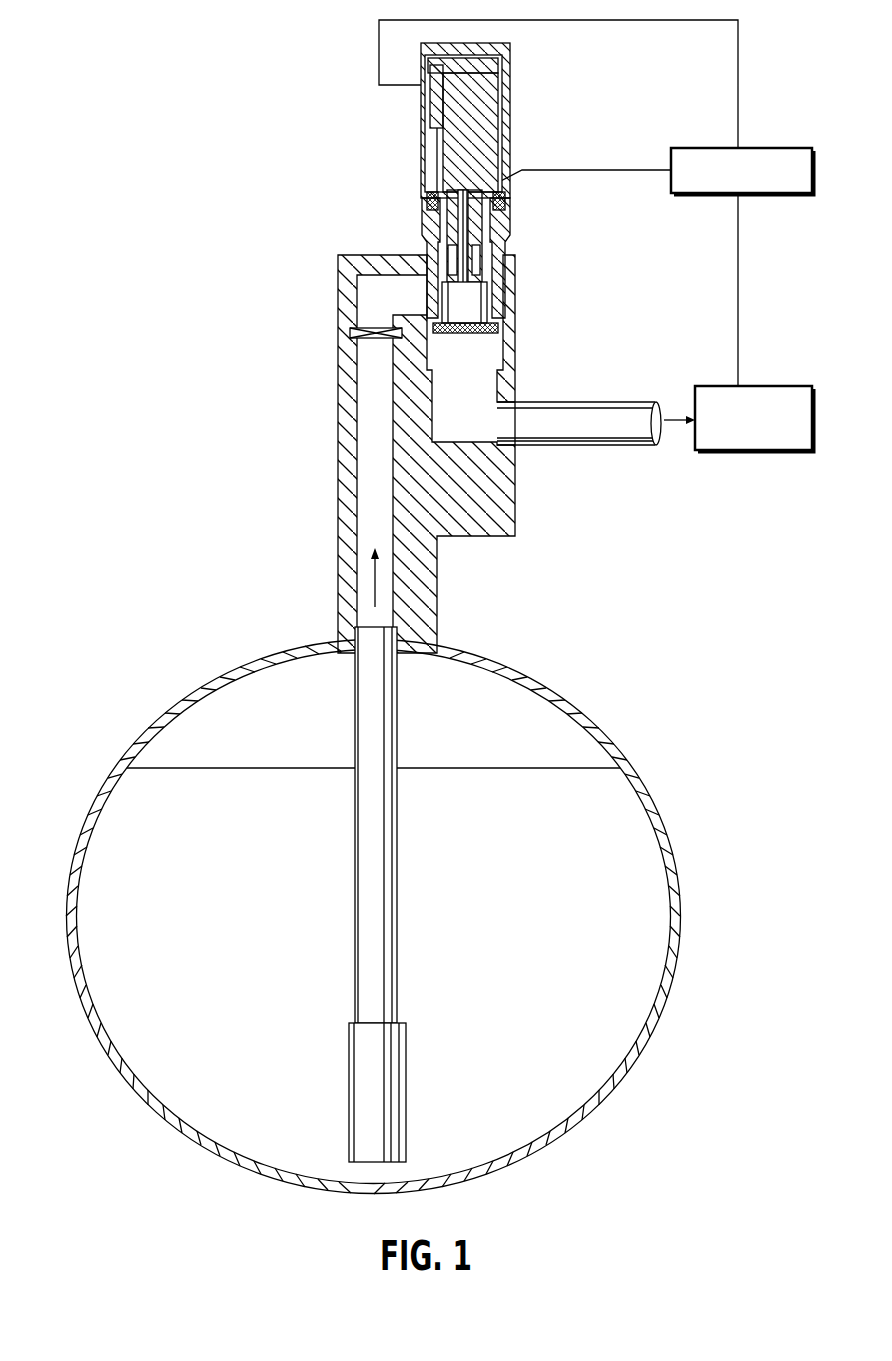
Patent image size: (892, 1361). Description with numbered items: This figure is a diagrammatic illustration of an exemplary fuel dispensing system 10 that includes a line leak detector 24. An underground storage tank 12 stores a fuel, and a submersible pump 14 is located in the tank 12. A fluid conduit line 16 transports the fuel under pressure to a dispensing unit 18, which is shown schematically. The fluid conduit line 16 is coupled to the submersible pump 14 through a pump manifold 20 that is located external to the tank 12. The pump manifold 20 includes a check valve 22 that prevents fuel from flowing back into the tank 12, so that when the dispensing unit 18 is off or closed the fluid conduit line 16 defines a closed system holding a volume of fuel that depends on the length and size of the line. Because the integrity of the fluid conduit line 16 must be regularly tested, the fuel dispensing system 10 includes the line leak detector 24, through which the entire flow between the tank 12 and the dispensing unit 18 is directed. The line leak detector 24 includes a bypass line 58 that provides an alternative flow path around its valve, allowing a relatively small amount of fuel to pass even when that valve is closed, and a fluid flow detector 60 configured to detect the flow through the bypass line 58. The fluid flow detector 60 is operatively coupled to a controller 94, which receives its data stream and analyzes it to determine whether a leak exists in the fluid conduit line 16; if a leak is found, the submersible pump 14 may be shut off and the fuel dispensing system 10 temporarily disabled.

The fuel dispensing system 10 is at (216, 116).
The underground storage tank 12 is at (615, 732).
The submersible pump 14 is at (414, 1123).
The fluid conduit line 16 is at (600, 402).
The dispensing unit 18 is at (783, 386).
The pump manifold 20 is at (522, 503).
The check valve 22 is at (378, 340).
The line leak detector 24 is at (463, 188).
The bypass line 58 is at (506, 123).
The fluid flow detector 60 is at (423, 105).
The controller 94 is at (786, 148).